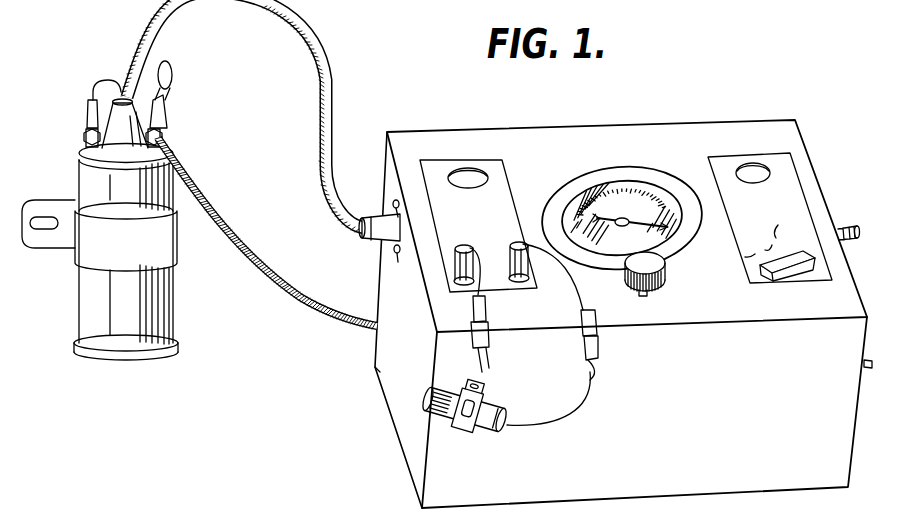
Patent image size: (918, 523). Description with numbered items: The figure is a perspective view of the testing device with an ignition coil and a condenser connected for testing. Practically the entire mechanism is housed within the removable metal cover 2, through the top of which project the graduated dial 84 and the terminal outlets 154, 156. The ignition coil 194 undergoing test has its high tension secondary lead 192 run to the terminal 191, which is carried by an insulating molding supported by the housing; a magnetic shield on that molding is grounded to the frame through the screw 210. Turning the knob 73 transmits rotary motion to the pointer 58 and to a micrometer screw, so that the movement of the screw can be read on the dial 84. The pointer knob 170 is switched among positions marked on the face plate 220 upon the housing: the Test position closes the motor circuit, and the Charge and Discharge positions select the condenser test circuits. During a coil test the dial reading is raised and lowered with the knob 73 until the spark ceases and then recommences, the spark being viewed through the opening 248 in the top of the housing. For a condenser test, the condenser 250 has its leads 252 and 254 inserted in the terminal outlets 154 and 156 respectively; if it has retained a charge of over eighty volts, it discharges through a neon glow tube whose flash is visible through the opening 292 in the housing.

The removable cover 2 is at (810, 478).
The pointer 58 is at (640, 220).
The knob 73 is at (666, 277).
The graduated scale or dial 84 is at (627, 197).
The terminal outlet 154 is at (452, 262).
The terminal outlet 156 is at (508, 272).
The pointer knob 170 is at (795, 270).
The terminal 191 is at (370, 236).
The lead 192 is at (325, 175).
The ignition coil 194 is at (170, 302).
The screw 210 is at (397, 245).
The face plate 220 is at (787, 199).
The opening 248 is at (467, 168).
The condenser 250 is at (487, 431).
The lead 252 is at (483, 311).
The lead 254 is at (590, 297).
The opening 292 is at (750, 163).